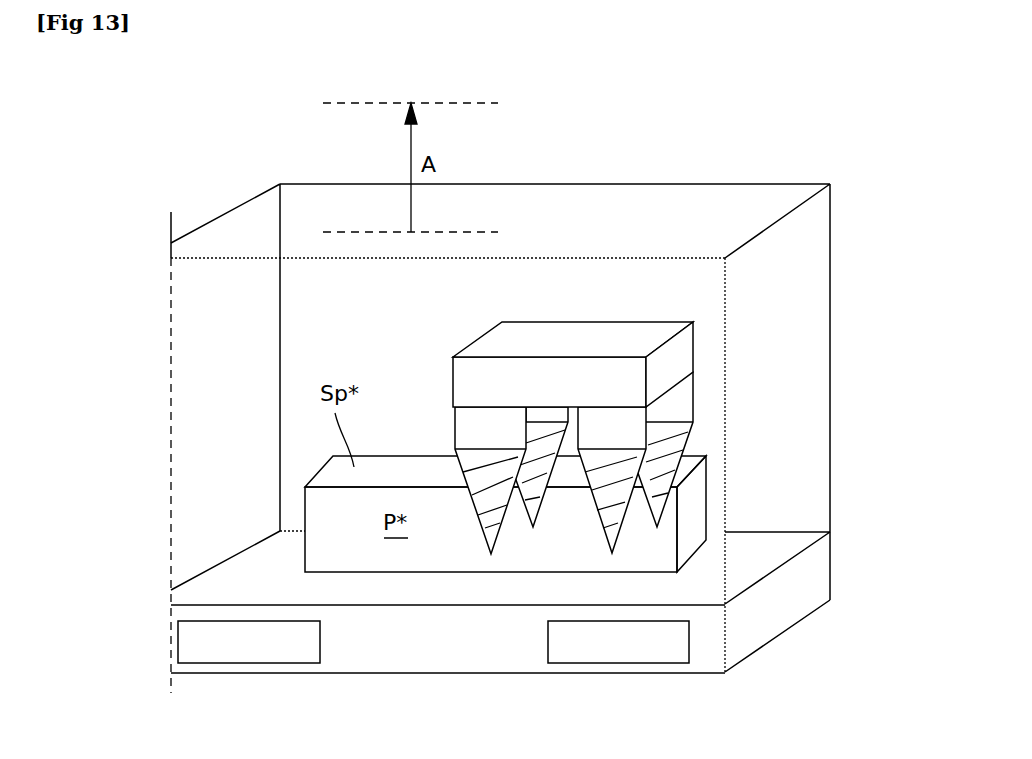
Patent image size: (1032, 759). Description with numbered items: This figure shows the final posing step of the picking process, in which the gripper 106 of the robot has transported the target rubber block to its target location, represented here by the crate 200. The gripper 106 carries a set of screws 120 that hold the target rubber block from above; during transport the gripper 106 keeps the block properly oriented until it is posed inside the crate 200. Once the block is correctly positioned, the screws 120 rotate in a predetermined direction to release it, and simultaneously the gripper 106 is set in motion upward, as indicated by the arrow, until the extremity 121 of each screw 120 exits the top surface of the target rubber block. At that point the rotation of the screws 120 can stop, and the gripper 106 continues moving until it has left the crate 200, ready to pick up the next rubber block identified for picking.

The gripper 106 is at (610, 338).
The crate 200 is at (803, 282).
The screws 120 is at (662, 468).
The extremity 121 is at (612, 553).